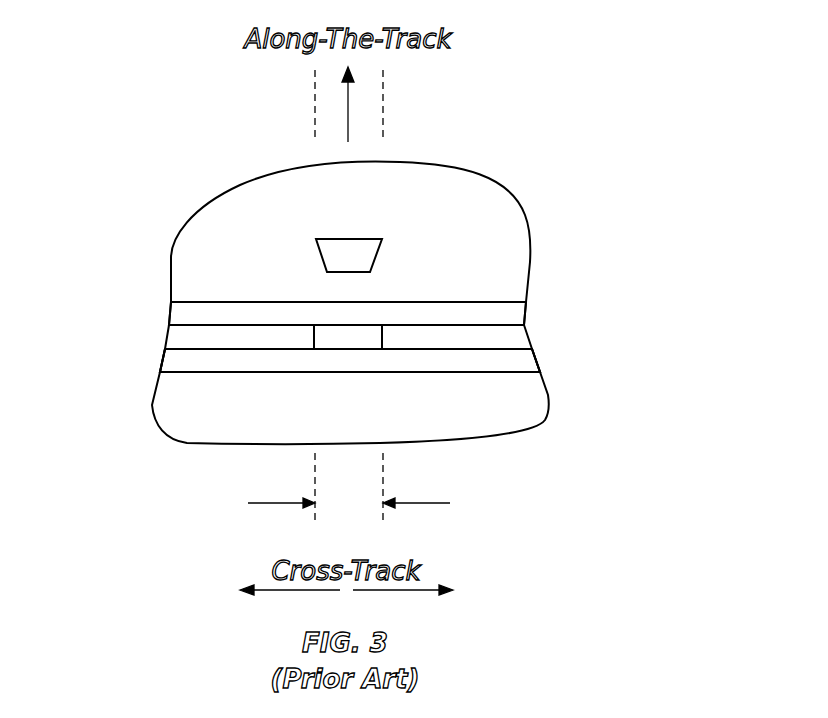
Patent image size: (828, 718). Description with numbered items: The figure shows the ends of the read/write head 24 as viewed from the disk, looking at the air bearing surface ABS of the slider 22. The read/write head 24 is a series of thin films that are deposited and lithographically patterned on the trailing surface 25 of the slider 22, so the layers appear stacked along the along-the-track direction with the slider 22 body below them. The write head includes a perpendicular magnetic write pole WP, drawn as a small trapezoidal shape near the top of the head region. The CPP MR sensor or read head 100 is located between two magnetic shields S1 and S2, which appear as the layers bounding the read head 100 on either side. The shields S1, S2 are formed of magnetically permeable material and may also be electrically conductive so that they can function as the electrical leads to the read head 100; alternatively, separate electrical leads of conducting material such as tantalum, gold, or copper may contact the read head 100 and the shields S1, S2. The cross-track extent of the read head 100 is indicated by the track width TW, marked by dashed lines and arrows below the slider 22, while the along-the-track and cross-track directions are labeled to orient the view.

The slider 22 is at (185, 435).
The read/write head 24 is at (112, 237).
The trailing surface 25 is at (166, 371).
The CPP MR sensor or read head 100 is at (370, 338).
The air bearing surface ABS is at (231, 197).
The perpendicular magnetic write pole WP is at (378, 257).
The first magnetic shield S1 is at (225, 365).
The second magnetic shield S2 is at (517, 315).
The track width TW is at (349, 489).